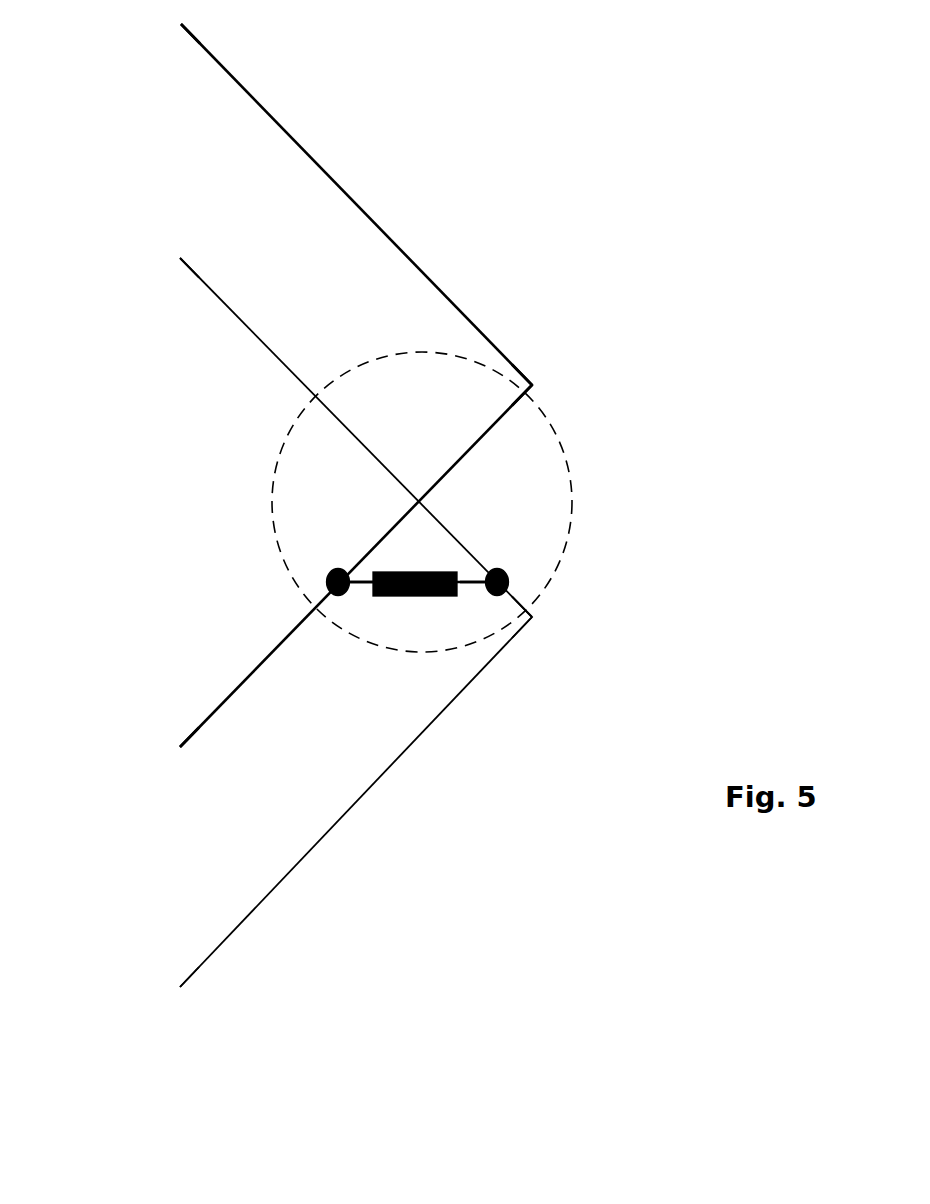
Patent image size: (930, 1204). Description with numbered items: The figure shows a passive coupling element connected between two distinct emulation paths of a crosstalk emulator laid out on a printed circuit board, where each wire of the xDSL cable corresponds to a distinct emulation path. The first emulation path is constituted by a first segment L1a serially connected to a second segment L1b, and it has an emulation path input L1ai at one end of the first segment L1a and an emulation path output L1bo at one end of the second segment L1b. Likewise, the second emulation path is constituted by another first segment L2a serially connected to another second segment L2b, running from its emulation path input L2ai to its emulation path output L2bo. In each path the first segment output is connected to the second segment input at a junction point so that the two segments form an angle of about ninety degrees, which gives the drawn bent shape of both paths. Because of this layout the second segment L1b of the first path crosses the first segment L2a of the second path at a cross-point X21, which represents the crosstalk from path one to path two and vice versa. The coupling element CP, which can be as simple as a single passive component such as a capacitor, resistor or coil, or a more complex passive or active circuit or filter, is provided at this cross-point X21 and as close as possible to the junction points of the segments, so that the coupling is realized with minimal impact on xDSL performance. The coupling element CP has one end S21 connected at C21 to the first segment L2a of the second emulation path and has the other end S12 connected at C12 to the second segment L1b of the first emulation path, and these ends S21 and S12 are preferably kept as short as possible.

The first segment L1a is at (357, 205).
The second segment L1b is at (255, 668).
The first segment L2a is at (262, 343).
The second segment L2b is at (293, 872).
The emulation path input L1ai is at (146, 25).
The emulation path input L2ai is at (146, 259).
The emulation path output L1bo is at (145, 749).
The emulation path output L2bo is at (146, 993).
The cross-point X21 is at (552, 425).
The coupling element CP is at (417, 603).
The connection point C12 is at (325, 565).
The connection point C21 is at (523, 572).
The end of the coupling element S21 is at (468, 582).
The end of the coupling element S12 is at (362, 590).